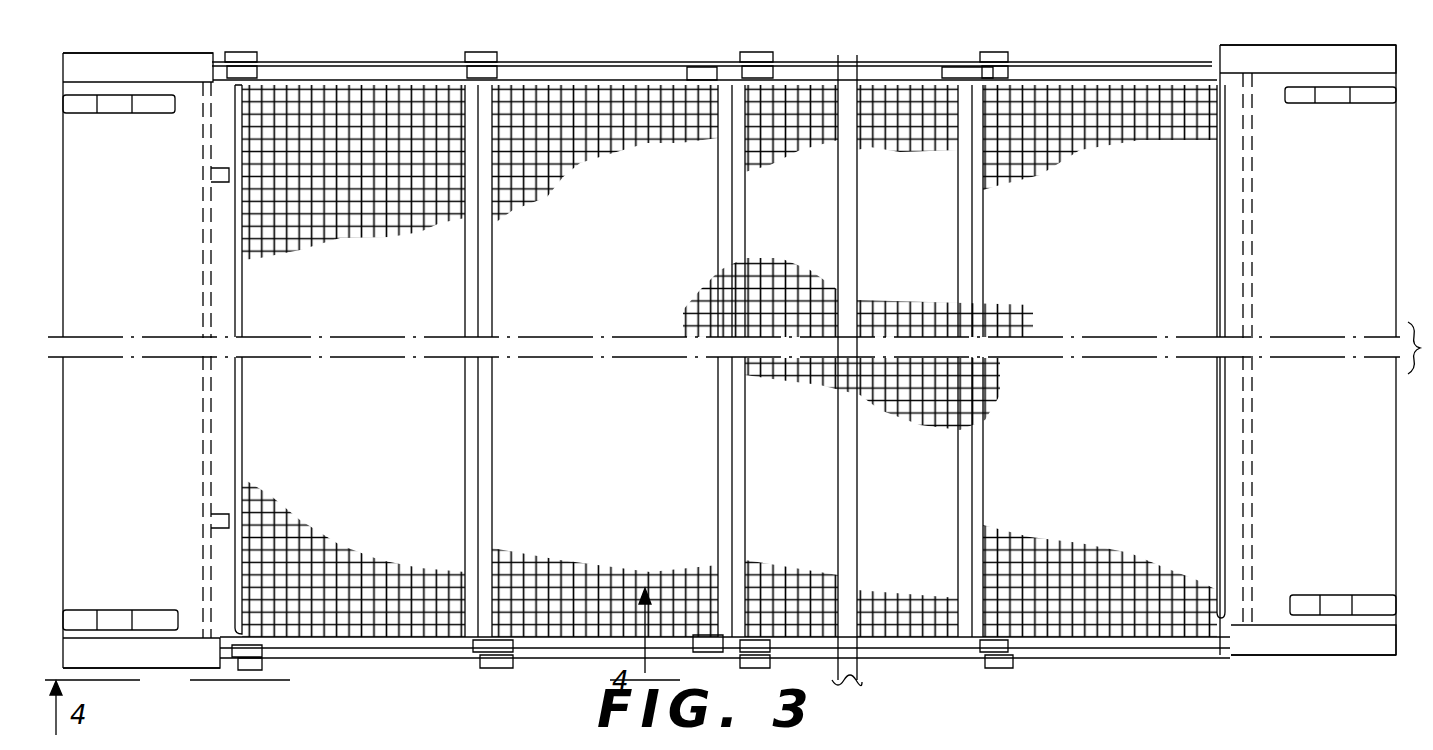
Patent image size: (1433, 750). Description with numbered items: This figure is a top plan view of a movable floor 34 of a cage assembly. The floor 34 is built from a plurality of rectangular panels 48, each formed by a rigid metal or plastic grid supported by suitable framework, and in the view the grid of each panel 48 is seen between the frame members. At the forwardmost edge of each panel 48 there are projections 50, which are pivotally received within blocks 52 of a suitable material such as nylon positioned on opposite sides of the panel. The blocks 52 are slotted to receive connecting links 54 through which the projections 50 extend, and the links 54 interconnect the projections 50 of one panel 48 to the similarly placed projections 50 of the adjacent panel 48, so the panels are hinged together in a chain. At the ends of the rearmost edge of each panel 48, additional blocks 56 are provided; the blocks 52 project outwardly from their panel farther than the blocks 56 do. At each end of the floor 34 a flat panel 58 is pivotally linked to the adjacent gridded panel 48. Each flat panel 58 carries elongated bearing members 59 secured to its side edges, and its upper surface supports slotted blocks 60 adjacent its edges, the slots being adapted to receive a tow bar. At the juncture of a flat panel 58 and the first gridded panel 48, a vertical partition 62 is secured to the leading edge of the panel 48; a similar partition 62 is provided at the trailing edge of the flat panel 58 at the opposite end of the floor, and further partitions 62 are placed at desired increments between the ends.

The movable floor 34 is at (393, 298).
The rectangular panel 48 is at (340, 100).
The projection 50 is at (267, 78).
The block 52 is at (222, 50).
The connecting link 54 is at (428, 64).
The block 56 is at (455, 660).
The flat panel 58 is at (136, 298).
The bearing member 59 is at (95, 57).
The slotted block 60 is at (150, 113).
The vertical partition 62 is at (243, 300).